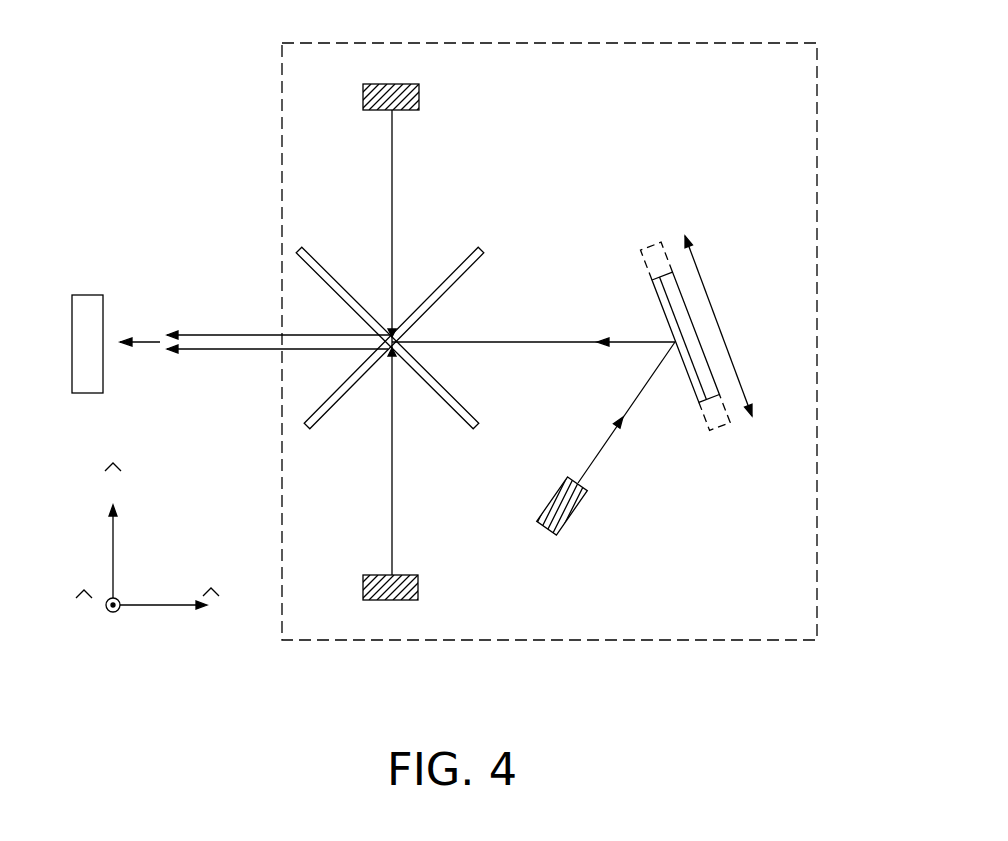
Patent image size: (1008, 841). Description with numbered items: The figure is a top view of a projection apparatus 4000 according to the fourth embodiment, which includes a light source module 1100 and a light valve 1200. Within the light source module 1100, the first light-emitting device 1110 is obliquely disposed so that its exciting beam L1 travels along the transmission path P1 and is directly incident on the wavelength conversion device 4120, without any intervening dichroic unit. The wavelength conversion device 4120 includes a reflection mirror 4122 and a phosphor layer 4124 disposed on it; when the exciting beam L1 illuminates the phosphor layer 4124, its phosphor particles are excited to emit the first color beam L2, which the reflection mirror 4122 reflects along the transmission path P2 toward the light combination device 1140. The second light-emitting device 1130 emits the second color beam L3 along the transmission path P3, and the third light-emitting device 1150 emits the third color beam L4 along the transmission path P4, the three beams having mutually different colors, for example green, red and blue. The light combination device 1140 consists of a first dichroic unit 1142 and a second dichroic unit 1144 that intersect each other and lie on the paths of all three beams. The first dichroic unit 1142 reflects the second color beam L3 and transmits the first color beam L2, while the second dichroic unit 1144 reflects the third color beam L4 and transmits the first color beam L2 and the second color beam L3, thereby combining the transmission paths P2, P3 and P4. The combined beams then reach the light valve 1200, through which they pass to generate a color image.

The projection apparatus 4000 is at (834, 731).
The light source module 1100 is at (282, 122).
The first light-emitting device 1110 is at (572, 515).
The second light-emitting device 1130 is at (420, 98).
The third light-emitting device 1150 is at (419, 590).
The light combination device 1140 is at (465, 308).
The first dichroic unit 1142 is at (483, 253).
The second dichroic unit 1144 is at (435, 385).
The light valve 1200 is at (83, 298).
The wavelength conversion device 4120 is at (717, 397).
The reflection mirror 4122 is at (725, 390).
The phosphor layer 4124 is at (692, 386).
The exciting beam L1 is at (598, 445).
The first color beam L2 is at (622, 340).
The second color beam L3 is at (393, 157).
The third color beam L4 is at (392, 500).
The transmission path of the exciting beam P1 is at (633, 405).
The transmission path of the first color beam P2 is at (525, 340).
The transmission path of the second color beam P3 is at (393, 212).
The transmission path of the third color beam P4 is at (392, 445).